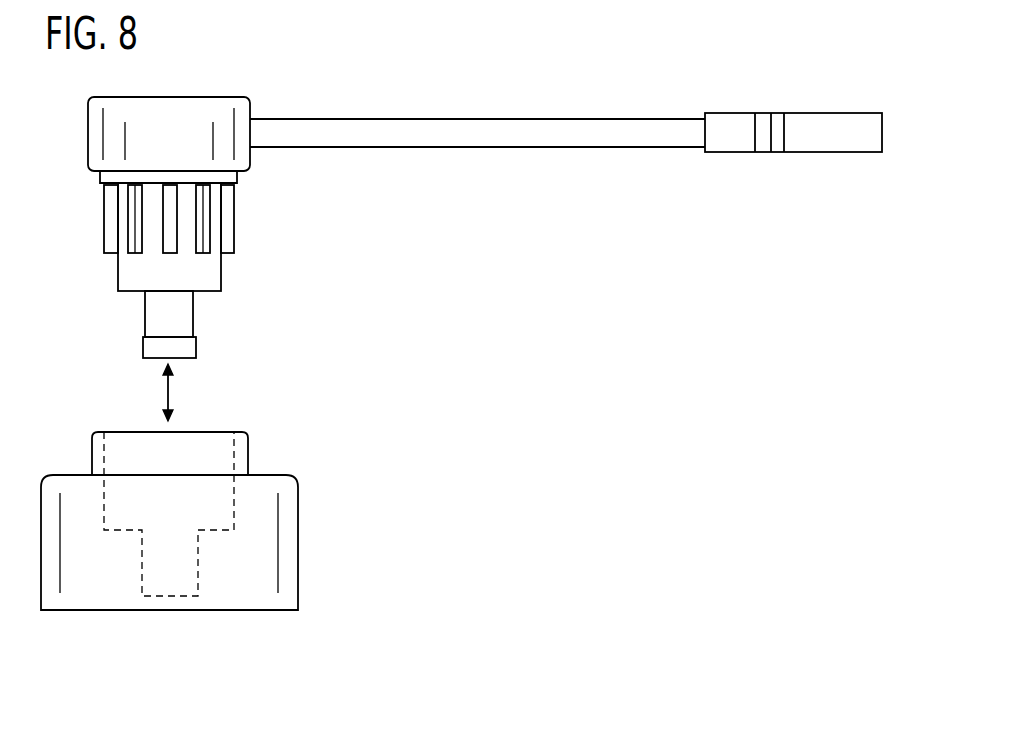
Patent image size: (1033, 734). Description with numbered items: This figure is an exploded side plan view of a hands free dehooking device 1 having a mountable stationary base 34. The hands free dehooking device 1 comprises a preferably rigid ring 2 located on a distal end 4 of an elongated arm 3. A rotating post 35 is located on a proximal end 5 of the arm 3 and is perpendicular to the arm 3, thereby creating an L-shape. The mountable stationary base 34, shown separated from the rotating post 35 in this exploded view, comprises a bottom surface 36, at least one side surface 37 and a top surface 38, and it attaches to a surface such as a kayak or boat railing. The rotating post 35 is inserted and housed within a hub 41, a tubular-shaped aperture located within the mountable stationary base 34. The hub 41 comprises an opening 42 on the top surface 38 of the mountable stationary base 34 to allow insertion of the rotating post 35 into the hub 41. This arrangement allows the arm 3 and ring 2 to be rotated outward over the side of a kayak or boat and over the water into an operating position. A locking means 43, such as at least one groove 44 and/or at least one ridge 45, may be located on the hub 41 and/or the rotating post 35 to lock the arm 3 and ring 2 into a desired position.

The hands free dehooking device 1 is at (513, 110).
The ring 2 is at (823, 113).
The elongated arm 3 is at (478, 147).
The distal end 4 is at (695, 147).
The proximal end 5 is at (260, 119).
The rotating post 35 is at (221, 280).
The locking means 43 is at (170, 220).
The groove 44 is at (125, 212).
The ridge 45 is at (130, 232).
The opening 42 is at (130, 450).
The top surface 38 is at (238, 432).
The side surface 37 is at (298, 497).
The hub 41 is at (235, 500).
The mountable stationary base 34 is at (298, 570).
The bottom surface 36 is at (233, 610).